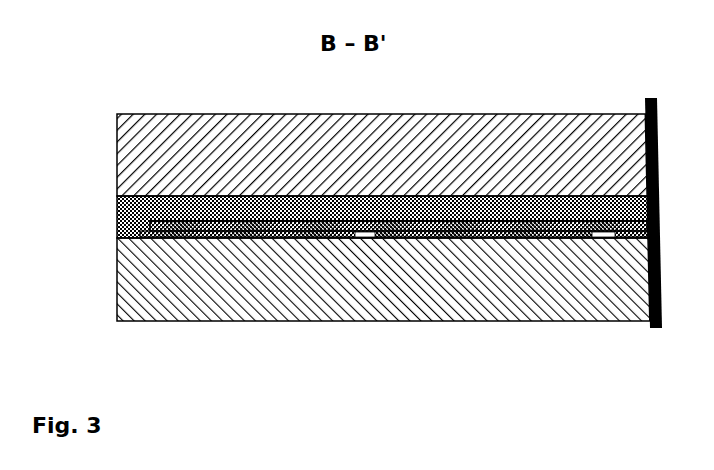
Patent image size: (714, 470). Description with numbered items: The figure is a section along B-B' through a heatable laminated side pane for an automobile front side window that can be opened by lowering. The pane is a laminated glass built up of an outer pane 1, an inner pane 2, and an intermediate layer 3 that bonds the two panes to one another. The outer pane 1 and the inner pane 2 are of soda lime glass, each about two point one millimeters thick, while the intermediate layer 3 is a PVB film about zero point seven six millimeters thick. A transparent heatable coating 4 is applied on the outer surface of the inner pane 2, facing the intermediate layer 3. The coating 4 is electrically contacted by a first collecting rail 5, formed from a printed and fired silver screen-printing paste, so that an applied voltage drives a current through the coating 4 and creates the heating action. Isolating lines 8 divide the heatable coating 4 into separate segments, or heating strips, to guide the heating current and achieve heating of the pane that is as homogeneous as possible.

The outer pane 1 is at (137, 160).
The inner pane 2 is at (150, 295).
The intermediate layer 3 is at (132, 225).
The heatable coating 4 is at (268, 237).
The first collecting rail 5 is at (515, 222).
The isolating lines 8 is at (364, 243).